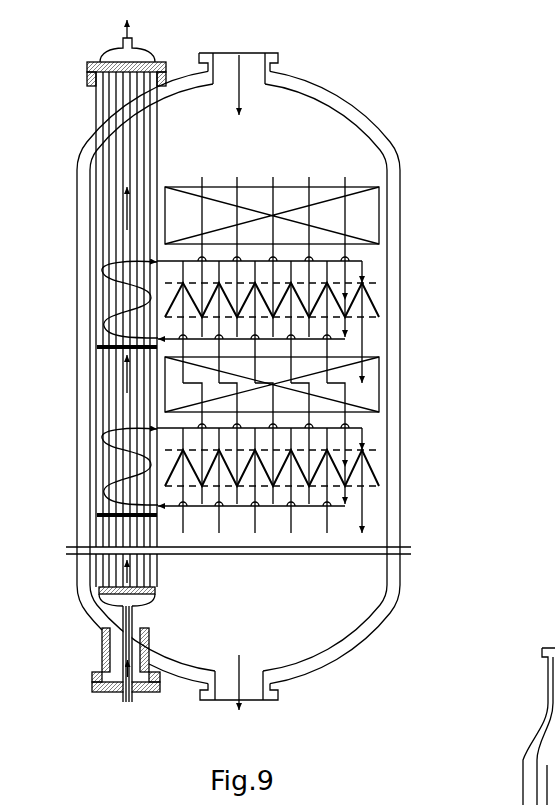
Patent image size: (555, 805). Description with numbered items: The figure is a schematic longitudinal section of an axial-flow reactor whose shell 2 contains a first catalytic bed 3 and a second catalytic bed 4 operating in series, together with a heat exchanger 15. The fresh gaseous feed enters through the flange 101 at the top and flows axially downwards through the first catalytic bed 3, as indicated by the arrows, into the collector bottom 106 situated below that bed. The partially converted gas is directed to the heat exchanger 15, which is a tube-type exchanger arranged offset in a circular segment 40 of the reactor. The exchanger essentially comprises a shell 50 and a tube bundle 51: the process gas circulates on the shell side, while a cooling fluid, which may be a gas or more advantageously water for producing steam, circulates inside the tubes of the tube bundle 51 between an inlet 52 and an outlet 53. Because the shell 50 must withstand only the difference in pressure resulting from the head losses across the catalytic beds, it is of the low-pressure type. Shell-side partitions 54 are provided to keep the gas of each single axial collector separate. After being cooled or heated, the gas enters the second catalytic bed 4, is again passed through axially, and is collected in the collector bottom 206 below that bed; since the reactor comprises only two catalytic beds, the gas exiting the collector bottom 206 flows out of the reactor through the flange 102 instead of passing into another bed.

The shell 2 is at (362, 118).
The first catalytic bed 3 is at (366, 213).
The second catalytic bed 4 is at (366, 384).
The heat exchanger 15 is at (68, 535).
The circular segment 40 is at (170, 622).
The shell 50 is at (100, 294).
The tube bundle 51 is at (106, 195).
The inlet 52 is at (124, 703).
The outlet 53 is at (132, 38).
The shell-side partitions 54 is at (97, 347).
The flange 101 is at (248, 53).
The flange 102 is at (250, 700).
The collector bottom 106 is at (369, 310).
The collector bottom 206 is at (369, 477).